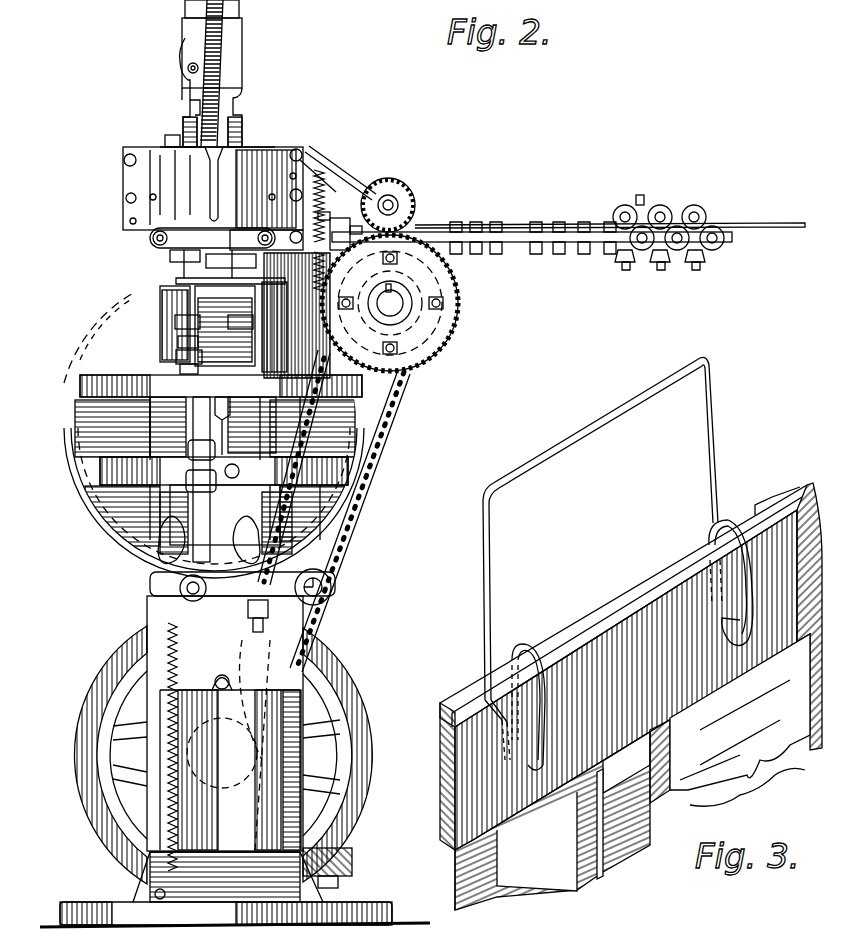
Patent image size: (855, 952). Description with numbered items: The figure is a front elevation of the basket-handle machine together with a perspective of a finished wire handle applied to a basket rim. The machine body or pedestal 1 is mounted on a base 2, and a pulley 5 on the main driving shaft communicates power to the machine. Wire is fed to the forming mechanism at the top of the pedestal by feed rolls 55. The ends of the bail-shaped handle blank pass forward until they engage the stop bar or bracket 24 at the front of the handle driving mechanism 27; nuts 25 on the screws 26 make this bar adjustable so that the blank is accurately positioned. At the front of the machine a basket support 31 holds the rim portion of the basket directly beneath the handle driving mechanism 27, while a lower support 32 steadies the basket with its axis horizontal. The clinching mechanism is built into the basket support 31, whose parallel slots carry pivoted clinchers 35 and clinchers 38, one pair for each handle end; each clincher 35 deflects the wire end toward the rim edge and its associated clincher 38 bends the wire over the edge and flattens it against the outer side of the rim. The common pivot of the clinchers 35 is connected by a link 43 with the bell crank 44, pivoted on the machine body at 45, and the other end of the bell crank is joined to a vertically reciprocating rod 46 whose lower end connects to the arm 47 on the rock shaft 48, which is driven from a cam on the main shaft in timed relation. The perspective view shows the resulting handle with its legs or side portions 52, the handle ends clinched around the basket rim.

In FIG. 2, the machine body or pedestal 1 is at (190, 660).
In FIG. 2, the base 2 is at (90, 916).
In FIG. 2, the pulley 5 is at (335, 676).
In FIG. 2, the stop bar or bracket 24 is at (210, 242).
In FIG. 2, the nuts 25 is at (270, 232).
In FIG. 2, the screws 26 is at (332, 198).
In FIG. 2, the handle driving mechanism 27 is at (237, 178).
In FIG. 2, the basket support 31 is at (185, 294).
In FIG. 2, the support 32 is at (135, 540).
In FIG. 2, the clinchers 35 is at (230, 306).
In FIG. 2, the clinchers 38 is at (200, 264).
In FIG. 2, the link 43 is at (245, 322).
In FIG. 2, the bell crank 44 is at (185, 343).
In FIG. 2, the pivot 45 is at (190, 354).
In FIG. 2, the vertically reciprocating rod 46 is at (195, 414).
In FIG. 2, the arm 47 is at (265, 580).
In FIG. 2, the rock shaft 48 is at (332, 592).
In FIG. 3, the legs or side portions 52 is at (714, 468).
In FIG. 2, the feed rolls 55 is at (414, 258).